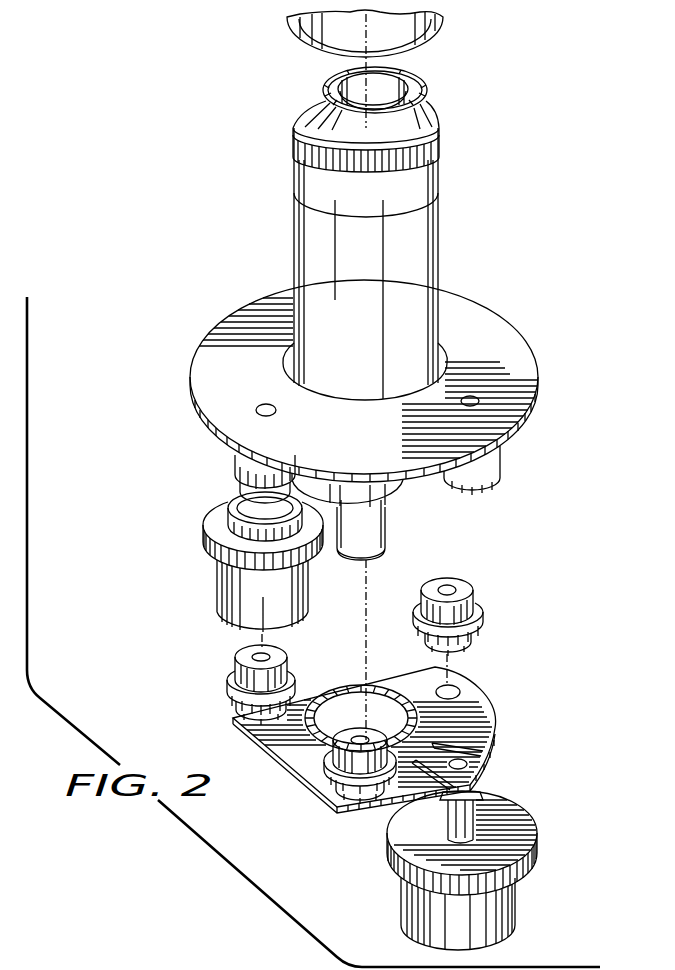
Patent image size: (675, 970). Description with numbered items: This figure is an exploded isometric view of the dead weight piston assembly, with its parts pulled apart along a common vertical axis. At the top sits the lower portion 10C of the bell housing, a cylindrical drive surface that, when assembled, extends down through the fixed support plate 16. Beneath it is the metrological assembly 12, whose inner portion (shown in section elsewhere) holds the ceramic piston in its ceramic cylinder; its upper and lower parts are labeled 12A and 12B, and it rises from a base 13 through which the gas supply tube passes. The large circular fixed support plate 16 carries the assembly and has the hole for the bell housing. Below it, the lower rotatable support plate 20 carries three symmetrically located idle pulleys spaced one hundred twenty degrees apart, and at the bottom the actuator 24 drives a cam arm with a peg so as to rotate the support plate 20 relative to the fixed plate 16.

The lower portion of bell housing 10C is at (428, 27).
The metrological assembly 12 is at (303, 85).
The upper ring of neck 12A is at (420, 99).
The lower band of neck 12B is at (434, 158).
The cylindrical body 13 is at (431, 246).
The fixed support plate 16 is at (516, 345).
The lower rotatable support plate 20 is at (319, 774).
The actuator 24 is at (508, 910).